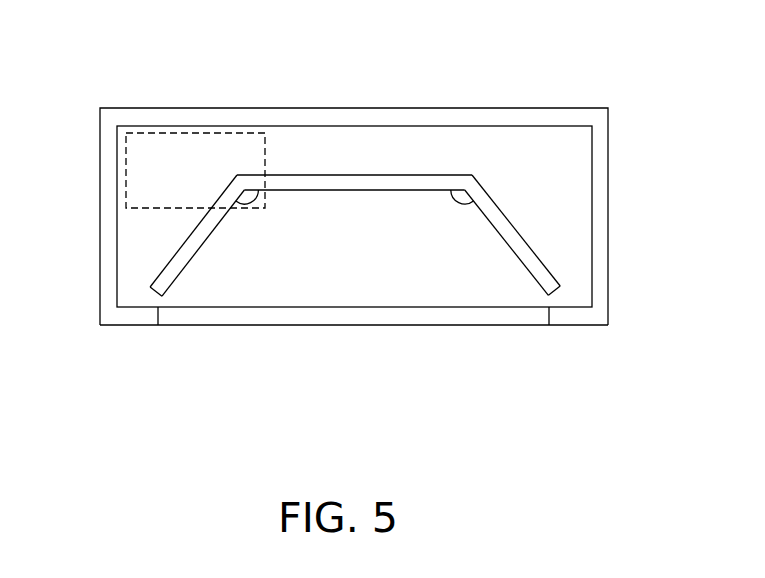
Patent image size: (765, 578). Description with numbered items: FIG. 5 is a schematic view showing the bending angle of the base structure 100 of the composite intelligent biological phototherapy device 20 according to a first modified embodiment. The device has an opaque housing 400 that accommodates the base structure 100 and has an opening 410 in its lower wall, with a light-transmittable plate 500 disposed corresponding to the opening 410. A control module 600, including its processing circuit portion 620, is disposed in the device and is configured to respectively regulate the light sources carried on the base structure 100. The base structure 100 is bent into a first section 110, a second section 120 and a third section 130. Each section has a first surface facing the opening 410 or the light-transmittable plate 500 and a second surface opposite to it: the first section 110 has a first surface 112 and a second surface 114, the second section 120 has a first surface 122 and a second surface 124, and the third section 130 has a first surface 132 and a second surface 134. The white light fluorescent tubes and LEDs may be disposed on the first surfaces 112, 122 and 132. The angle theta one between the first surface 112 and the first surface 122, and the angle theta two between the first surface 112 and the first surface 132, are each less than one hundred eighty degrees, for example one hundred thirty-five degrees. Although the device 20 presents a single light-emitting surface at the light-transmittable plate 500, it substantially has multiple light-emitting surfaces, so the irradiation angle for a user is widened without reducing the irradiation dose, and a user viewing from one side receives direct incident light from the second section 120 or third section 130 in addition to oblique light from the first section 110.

The composite intelligent biological phototherapy device 20 is at (86, 30).
The base structure 100 is at (556, 286).
The first section 110 is at (363, 183).
The first surface of the first section 112 is at (338, 192).
The second surface of the first section 114 is at (409, 173).
The second section 120 is at (167, 275).
The first surface of the second section 122 is at (198, 251).
The second surface of the second section 124 is at (171, 254).
The third section 130 is at (530, 260).
The first surface of the third section 132 is at (512, 251).
The second surface of the third section 134 is at (508, 217).
The housing 400 is at (551, 118).
The opening 410 is at (507, 333).
The light-transmittable plate 500 is at (277, 312).
The control module 600 is at (260, 163).
The processing circuit portion 620 is at (195, 170).